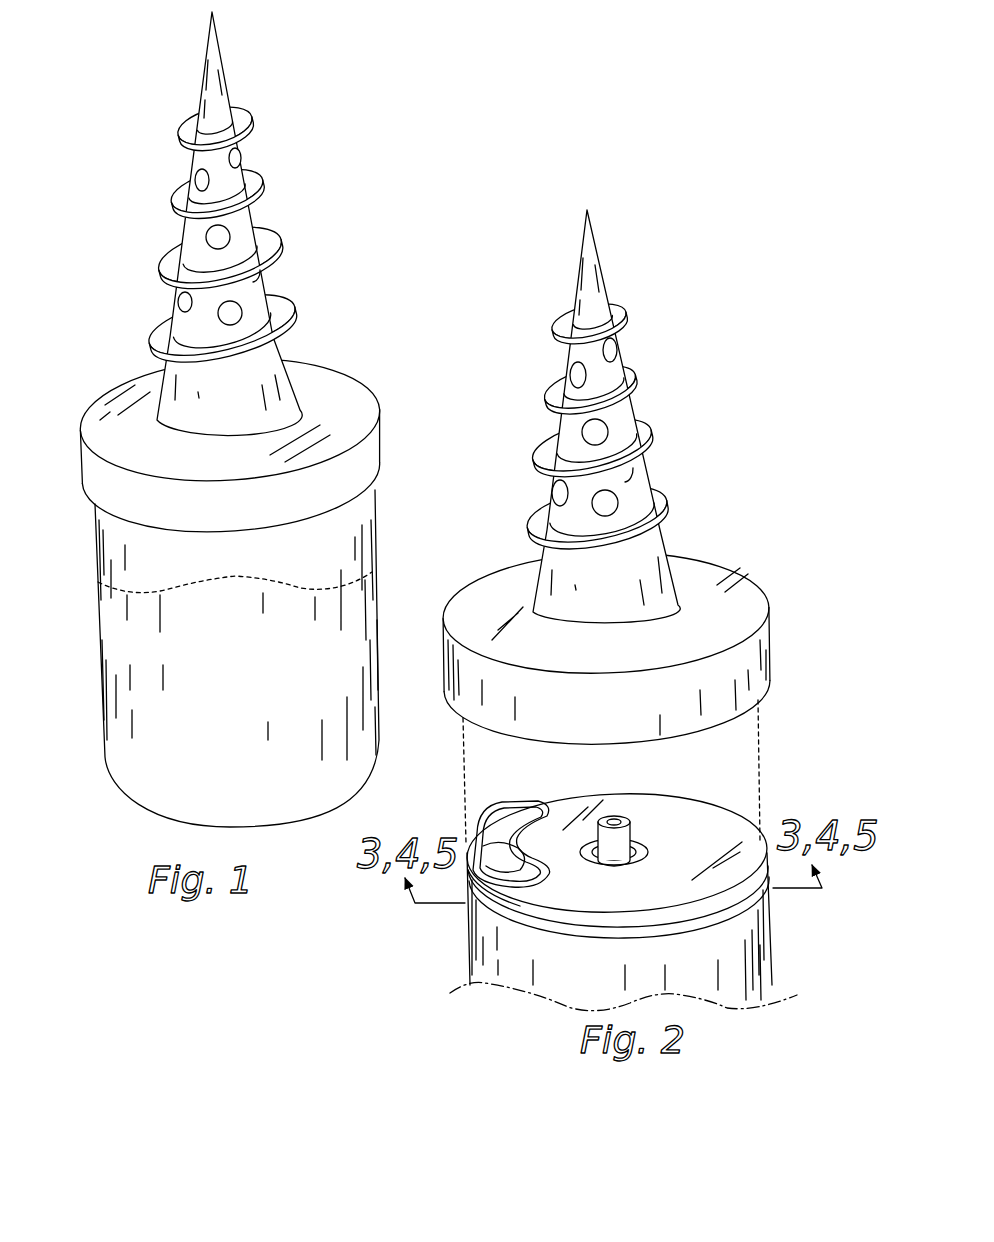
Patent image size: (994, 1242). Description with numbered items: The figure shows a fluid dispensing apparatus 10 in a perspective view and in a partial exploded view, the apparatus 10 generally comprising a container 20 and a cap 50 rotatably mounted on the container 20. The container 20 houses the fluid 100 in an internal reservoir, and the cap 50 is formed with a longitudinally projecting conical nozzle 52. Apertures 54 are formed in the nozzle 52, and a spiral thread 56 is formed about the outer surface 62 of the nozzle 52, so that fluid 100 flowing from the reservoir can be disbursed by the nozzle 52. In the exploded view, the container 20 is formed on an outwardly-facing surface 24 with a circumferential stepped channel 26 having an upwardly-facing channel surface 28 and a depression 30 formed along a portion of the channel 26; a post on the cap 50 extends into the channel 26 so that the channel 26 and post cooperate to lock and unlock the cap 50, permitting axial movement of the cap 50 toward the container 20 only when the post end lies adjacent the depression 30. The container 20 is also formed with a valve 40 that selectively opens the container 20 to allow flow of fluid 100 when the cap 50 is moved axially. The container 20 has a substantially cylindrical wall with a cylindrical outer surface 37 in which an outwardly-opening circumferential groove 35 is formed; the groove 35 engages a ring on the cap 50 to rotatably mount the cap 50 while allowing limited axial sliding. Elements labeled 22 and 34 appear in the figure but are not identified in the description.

In FIG. 1, the fluid dispensing apparatus 10 is at (118, 356).
In FIG. 2, the fluid dispensing apparatus 10 is at (760, 544).
In FIG. 1, the container 20 is at (95, 613).
In FIG. 2, the opening 22 is at (484, 813).
In FIG. 2, the outwardly-facing surface 24 is at (707, 818).
In FIG. 2, the circumferential stepped channel 26 is at (525, 800).
In FIG. 2, the upwardly-facing channel surface 28 is at (500, 837).
In FIG. 2, the depression 30 is at (485, 913).
In FIG. 2, the lip 34 is at (750, 912).
In FIG. 2, the circumferential groove 35 is at (718, 920).
In FIG. 2, the cylindrical outer surface 37 is at (487, 970).
In FIG. 2, the valve 40 is at (642, 829).
In FIG. 1, the cap 50 is at (227, 223).
In FIG. 2, the cap 50 is at (595, 416).
In FIG. 1, the conical nozzle 52 is at (175, 167).
In FIG. 2, the conical nozzle 52 is at (538, 418).
In FIG. 1, the apertures 54 is at (178, 302).
In FIG. 2, the apertures 54 is at (618, 352).
In FIG. 1, the spiral thread 56 is at (246, 112).
In FIG. 2, the spiral thread 56 is at (665, 490).
In FIG. 1, the outer surface 62 is at (290, 347).
In FIG. 2, the outer surface 62 is at (606, 648).
In FIG. 1, the fluid 100 is at (332, 614).